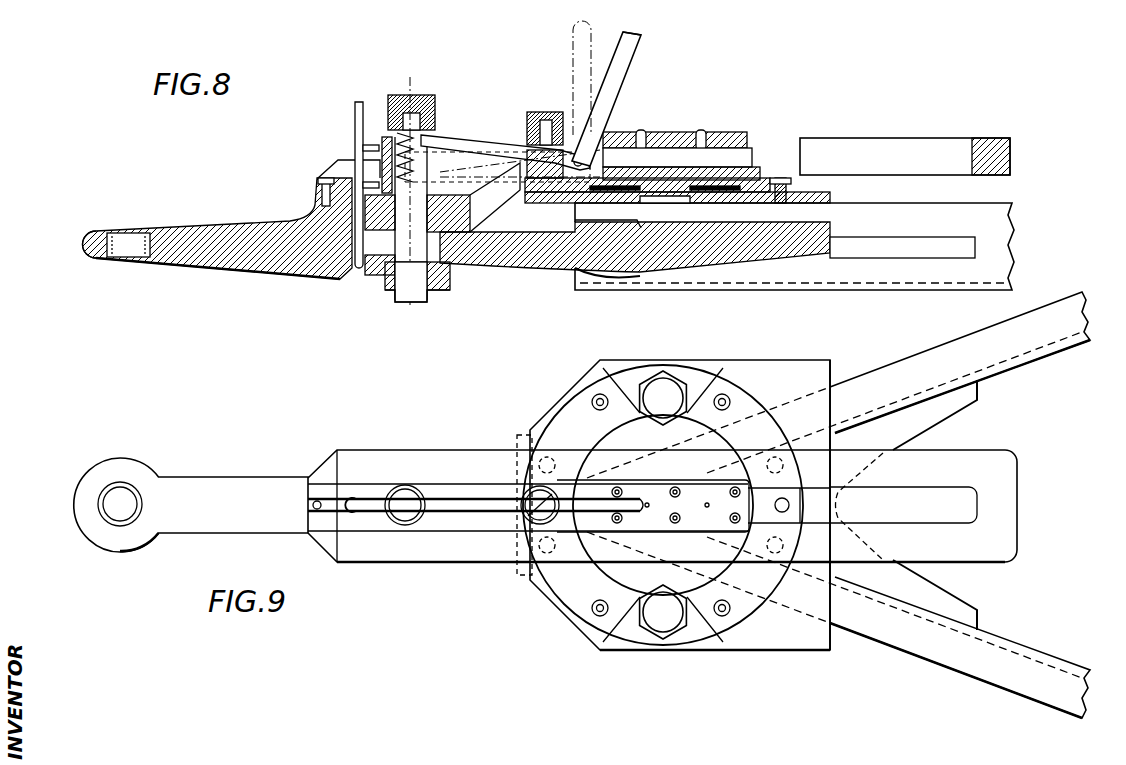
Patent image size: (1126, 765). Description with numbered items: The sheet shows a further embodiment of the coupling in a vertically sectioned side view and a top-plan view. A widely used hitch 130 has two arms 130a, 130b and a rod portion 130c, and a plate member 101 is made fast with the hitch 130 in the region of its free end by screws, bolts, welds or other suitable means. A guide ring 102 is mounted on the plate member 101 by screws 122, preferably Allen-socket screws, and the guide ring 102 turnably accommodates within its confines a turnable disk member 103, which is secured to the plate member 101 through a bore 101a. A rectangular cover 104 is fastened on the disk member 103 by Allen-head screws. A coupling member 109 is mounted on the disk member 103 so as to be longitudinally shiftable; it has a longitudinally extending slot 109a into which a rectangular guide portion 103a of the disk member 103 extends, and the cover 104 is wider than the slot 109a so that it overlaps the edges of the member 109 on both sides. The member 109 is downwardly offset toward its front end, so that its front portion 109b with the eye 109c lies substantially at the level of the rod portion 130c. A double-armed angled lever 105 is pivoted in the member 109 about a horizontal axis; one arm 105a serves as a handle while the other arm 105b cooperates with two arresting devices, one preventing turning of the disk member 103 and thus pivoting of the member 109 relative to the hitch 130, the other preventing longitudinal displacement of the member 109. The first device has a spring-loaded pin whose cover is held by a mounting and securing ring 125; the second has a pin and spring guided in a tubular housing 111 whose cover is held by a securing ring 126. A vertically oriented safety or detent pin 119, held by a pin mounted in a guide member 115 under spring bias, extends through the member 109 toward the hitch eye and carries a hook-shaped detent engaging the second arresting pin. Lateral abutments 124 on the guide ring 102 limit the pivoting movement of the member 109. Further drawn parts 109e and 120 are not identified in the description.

In FIG. 8, the plate member 101 is at (824, 193).
In FIG. 9, the plate member 101 is at (815, 642).
In FIG. 8, the bore 101a is at (703, 203).
In FIG. 8, the guide ring 102 is at (810, 180).
In FIG. 9, the guide ring 102 is at (582, 400).
In FIG. 8, the turnable disk member 103 is at (752, 165).
In FIG. 9, the turnable disk member 103 is at (578, 430).
In FIG. 8, the rectangular guide portion 103a is at (747, 150).
In FIG. 8, the rectangular cover 104 is at (729, 132).
In FIG. 9, the rectangular cover 104 is at (744, 614).
In FIG. 8, the double-armed angled lever 105 is at (619, 105).
In FIG. 8, the handle arm 105a is at (628, 50).
In FIG. 8, the lever arm 105b is at (487, 138).
In FIG. 8, the coupling member 109 is at (888, 153).
In FIG. 9, the coupling member 109 is at (923, 543).
In FIG. 8, the longitudinally extending slot 109a is at (902, 247).
In FIG. 9, the longitudinally extending slot 109a is at (940, 510).
In FIG. 8, the front end portion 109b is at (262, 233).
In FIG. 8, the eye 109c is at (90, 259).
In FIG. 9, the eye 109c is at (138, 470).
In FIG. 8, the hub nut 109e is at (436, 282).
In FIG. 8, the tubular housing member 111 is at (457, 99).
In FIG. 8, the guide member 115 is at (315, 187).
In FIG. 8, the safety or detent pin 119 is at (353, 117).
In FIG. 9, the guide plate 120 is at (736, 490).
In FIG. 8, the screws 122 is at (790, 177).
In FIG. 9, the screws 122 is at (724, 396).
In FIG. 9, the lateral abutments 124 is at (625, 378).
In FIG. 9, the mounting and securing ring 125 is at (534, 516).
In FIG. 9, the securing ring 126 is at (405, 494).
In FIG. 8, the hitch 130 is at (696, 291).
In FIG. 9, the hitch 130 is at (859, 374).
In FIG. 9, the hitch arm 130a is at (915, 357).
In FIG. 9, the hitch arm 130b is at (913, 645).
In FIG. 8, the rod portion 130c is at (512, 248).